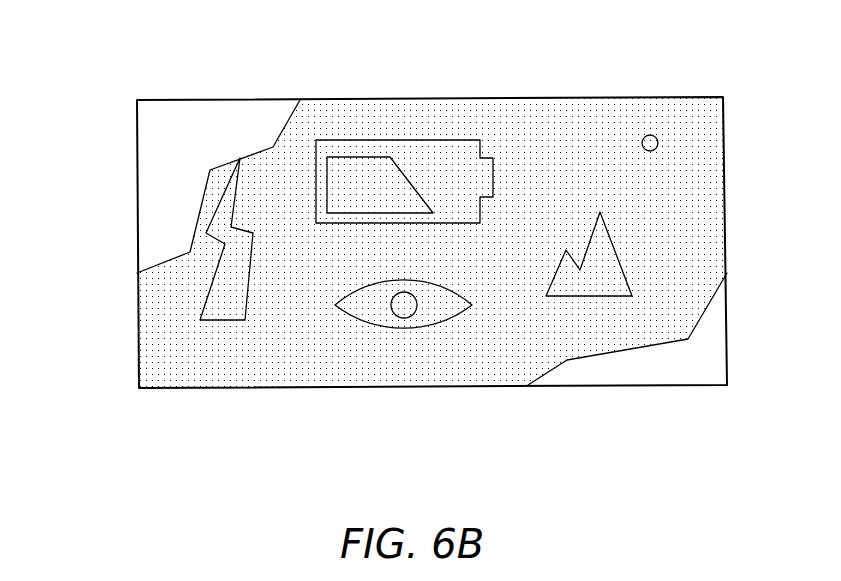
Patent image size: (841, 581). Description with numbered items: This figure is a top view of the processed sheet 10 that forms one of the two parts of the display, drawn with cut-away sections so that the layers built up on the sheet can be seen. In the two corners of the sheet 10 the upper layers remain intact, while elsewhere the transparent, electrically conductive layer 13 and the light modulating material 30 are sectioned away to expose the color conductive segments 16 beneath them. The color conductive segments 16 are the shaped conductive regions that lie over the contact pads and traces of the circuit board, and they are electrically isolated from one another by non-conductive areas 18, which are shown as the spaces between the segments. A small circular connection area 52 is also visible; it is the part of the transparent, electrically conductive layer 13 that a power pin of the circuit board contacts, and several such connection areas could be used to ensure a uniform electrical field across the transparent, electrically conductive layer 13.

The sheet 10 is at (203, 61).
The transparent, electrically conductive layer 13 is at (148, 212).
The light modulating material 30 is at (148, 175).
The color conductive segment 16 is at (478, 143).
The non-conductive area 18 is at (415, 157).
The connection area 52 is at (657, 135).